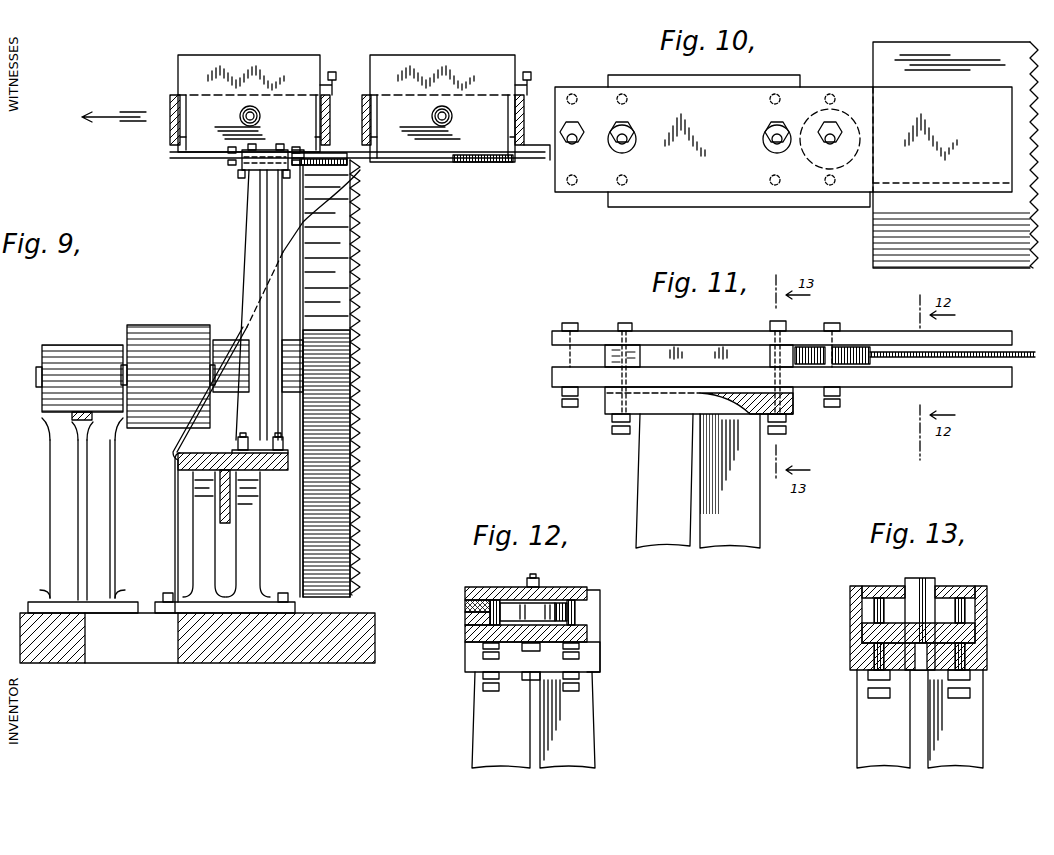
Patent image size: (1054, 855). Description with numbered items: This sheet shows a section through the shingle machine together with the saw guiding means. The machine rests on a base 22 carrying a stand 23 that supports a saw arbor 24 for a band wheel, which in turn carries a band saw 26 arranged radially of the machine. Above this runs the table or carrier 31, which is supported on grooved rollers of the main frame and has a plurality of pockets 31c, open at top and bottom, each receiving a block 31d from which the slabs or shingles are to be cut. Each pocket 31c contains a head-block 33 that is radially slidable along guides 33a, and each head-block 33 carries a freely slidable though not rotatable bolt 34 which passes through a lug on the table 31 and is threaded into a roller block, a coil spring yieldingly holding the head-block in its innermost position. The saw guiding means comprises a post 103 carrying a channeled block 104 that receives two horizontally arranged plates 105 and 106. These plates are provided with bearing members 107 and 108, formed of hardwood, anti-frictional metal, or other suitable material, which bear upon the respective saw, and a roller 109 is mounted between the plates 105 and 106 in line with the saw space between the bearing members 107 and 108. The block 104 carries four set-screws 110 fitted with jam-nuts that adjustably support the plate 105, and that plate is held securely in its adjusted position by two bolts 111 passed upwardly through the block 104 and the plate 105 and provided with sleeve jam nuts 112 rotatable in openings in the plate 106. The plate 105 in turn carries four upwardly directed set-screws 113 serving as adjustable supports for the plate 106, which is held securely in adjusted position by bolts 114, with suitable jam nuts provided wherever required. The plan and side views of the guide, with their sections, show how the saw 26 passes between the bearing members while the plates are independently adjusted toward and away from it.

In FIG. 9, the base 22 is at (244, 663).
In FIG. 9, the stand 23 is at (50, 556).
In FIG. 9, the saw arbor 24 is at (36, 379).
In FIG. 9, the band saw 26 is at (353, 366).
In FIG. 10, the band saw 26 is at (952, 48).
In FIG. 11, the band saw 26 is at (993, 360).
In FIG. 9, the table or carrier 31 is at (160, 133).
In FIG. 9, the pocket 31c is at (187, 112).
In FIG. 9, the block 31d is at (235, 55).
In FIG. 9, the head-block 33 is at (337, 114).
In FIG. 9, the guide 33a is at (180, 135).
In FIG. 9, the bolt 34 is at (247, 110).
In FIG. 9, the post 103 is at (250, 300).
In FIG. 11, the post 103 is at (640, 513).
In FIG. 12, the post 103 is at (594, 748).
In FIG. 13, the post 103 is at (857, 748).
In FIG. 9, the channeled block 104 is at (248, 172).
In FIG. 10, the channeled block 104 is at (693, 207).
In FIG. 11, the channeled block 104 is at (683, 418).
In FIG. 12, the channeled block 104 is at (600, 672).
In FIG. 13, the channeled block 104 is at (850, 657).
In FIG. 9, the plate 105 is at (336, 165).
In FIG. 11, the plate 105 is at (552, 380).
In FIG. 12, the plate 105 is at (588, 636).
In FIG. 13, the plate 105 is at (862, 633).
In FIG. 9, the plate 106 is at (338, 152).
In FIG. 10, the plate 106 is at (593, 197).
In FIG. 11, the plate 106 is at (552, 337).
In FIG. 12, the plate 106 is at (588, 590).
In FIG. 13, the plate 106 is at (870, 586).
In FIG. 11, the bearing member 107 is at (953, 360).
In FIG. 12, the bearing member 107 is at (465, 620).
In FIG. 11, the bearing member 108 is at (985, 347).
In FIG. 12, the bearing member 108 is at (465, 606).
In FIG. 11, the roller 109 is at (853, 348).
In FIG. 12, the roller 109 is at (553, 605).
In FIG. 10, the set-screw 110 is at (627, 99).
In FIG. 11, the set-screw 110 is at (619, 436).
In FIG. 12, the set-screw 110 is at (492, 691).
In FIG. 13, the set-screw 110 is at (882, 698).
In FIG. 10, the bolt 111 is at (704, 130).
In FIG. 13, the bolt 111 is at (874, 662).
In FIG. 10, the sleeve jam nut 112 is at (622, 146).
In FIG. 11, the sleeve jam nut 112 is at (625, 325).
In FIG. 13, the sleeve jam nut 112 is at (935, 586).
In FIG. 10, the set-screw 113 is at (573, 104).
In FIG. 11, the set-screw 113 is at (570, 404).
In FIG. 12, the set-screw 113 is at (580, 653).
In FIG. 13, the set-screw 113 is at (874, 612).
In FIG. 10, the bolt 114 is at (572, 145).
In FIG. 11, the bolt 114 is at (570, 323).